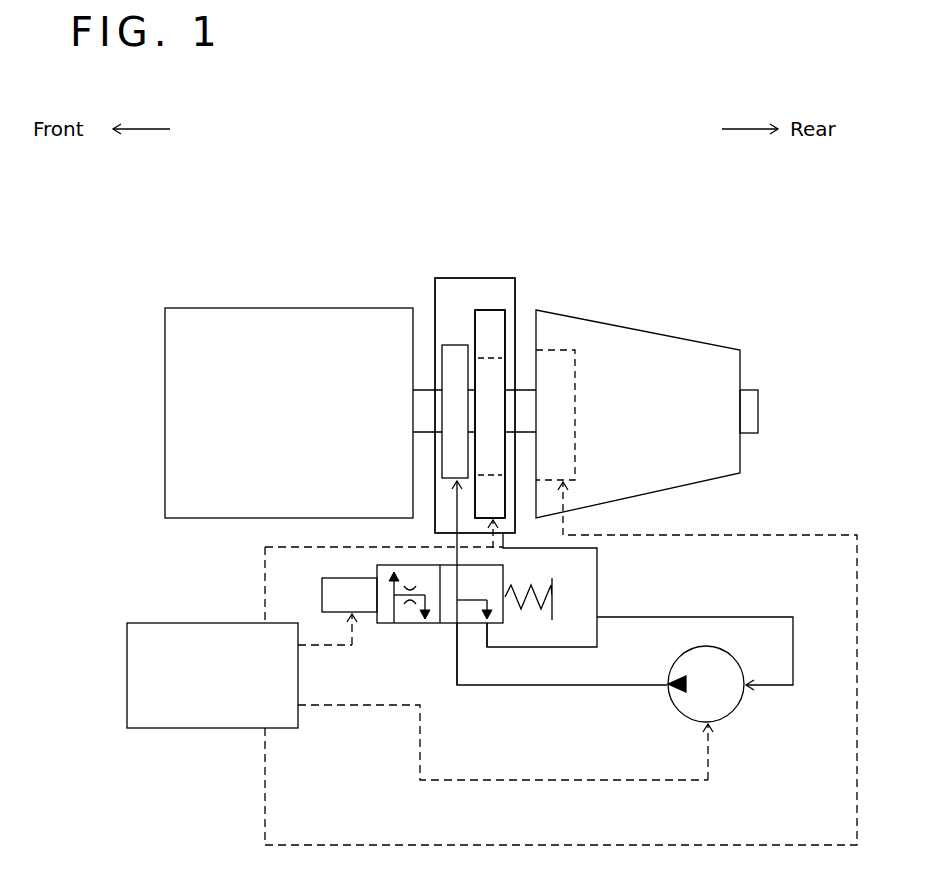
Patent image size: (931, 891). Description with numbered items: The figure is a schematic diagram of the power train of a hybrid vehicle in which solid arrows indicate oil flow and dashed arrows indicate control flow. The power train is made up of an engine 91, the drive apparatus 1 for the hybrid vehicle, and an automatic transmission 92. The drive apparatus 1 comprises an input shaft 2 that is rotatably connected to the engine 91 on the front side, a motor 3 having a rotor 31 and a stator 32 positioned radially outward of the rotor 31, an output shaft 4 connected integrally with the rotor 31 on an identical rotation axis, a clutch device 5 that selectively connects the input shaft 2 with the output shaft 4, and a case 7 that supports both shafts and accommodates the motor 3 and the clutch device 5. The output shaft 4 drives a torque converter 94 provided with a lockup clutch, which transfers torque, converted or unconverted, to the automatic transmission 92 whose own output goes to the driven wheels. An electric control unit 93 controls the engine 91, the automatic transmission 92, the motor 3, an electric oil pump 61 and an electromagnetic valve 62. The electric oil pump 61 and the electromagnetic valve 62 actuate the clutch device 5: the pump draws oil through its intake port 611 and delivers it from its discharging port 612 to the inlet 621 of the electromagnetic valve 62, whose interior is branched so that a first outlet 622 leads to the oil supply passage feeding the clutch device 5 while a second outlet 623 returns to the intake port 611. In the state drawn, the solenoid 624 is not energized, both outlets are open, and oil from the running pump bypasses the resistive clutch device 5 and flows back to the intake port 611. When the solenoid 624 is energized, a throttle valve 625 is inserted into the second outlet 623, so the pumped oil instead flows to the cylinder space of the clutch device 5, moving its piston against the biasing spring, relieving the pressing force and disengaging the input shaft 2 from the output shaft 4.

The drive apparatus 1 is at (469, 273).
The input shaft 2 is at (428, 400).
The motor 3 is at (525, 198).
The rotor 31 is at (488, 377).
The stator 32 is at (493, 323).
The output shaft 4 is at (527, 400).
The clutch device 5 is at (456, 368).
The case 7 is at (515, 290).
The engine 91 is at (227, 330).
The automatic transmission 92 is at (682, 358).
The electric control unit 93 is at (153, 708).
The torque converter 94 is at (558, 378).
The electric oil pump 61 is at (709, 698).
The intake port 611 is at (745, 690).
The discharging port 612 is at (667, 686).
The electromagnetic valve 62 is at (456, 658).
The inlet 621 is at (453, 625).
The first outlet 622 is at (455, 565).
The second outlet 623 is at (482, 626).
The solenoid 624 is at (322, 582).
The throttle valve 625 is at (410, 605).